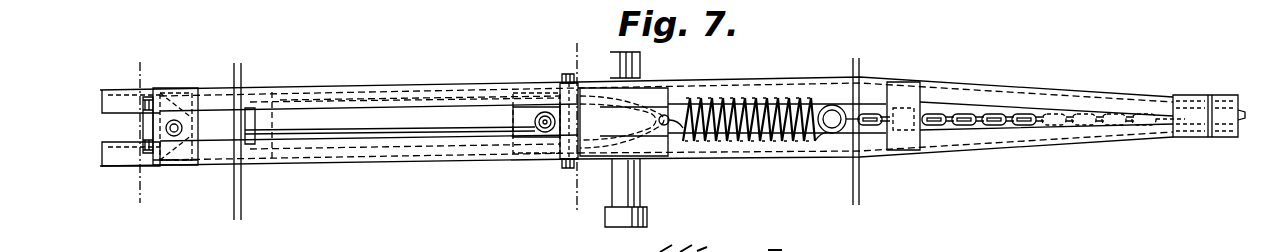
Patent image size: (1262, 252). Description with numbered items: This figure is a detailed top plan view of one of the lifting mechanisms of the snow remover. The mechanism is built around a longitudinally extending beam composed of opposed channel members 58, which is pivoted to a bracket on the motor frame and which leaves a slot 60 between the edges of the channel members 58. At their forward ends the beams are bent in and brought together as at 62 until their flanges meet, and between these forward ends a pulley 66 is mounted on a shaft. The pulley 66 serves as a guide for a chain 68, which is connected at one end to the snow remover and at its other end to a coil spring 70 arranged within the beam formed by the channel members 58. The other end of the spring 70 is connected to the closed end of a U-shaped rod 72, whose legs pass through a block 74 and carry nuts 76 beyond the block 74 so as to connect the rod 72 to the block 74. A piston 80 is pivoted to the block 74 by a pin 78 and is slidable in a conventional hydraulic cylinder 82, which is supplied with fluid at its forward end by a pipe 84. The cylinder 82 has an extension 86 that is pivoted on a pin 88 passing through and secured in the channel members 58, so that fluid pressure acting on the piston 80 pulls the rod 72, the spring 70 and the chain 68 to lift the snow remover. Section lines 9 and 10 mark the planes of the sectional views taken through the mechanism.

The section line 9- 9 is at (560, 43).
The section line 10- 10 is at (162, 61).
The channel members 58 is at (452, 147).
The slot 60 is at (121, 130).
The bent-in forward ends of beams 62 is at (1150, 114).
The pulley 66 is at (1220, 138).
The chain 68 is at (958, 105).
The coil spring 70 is at (800, 106).
The U-shaped rod 72 is at (392, 104).
The block 74 is at (192, 163).
The nuts 76 is at (160, 152).
The pin 78 is at (176, 120).
The piston 80 is at (218, 128).
The hydraulic cylinder 82 is at (482, 128).
The pipe 84 is at (541, 133).
The extension 86 is at (550, 112).
The pin 88 is at (567, 169).